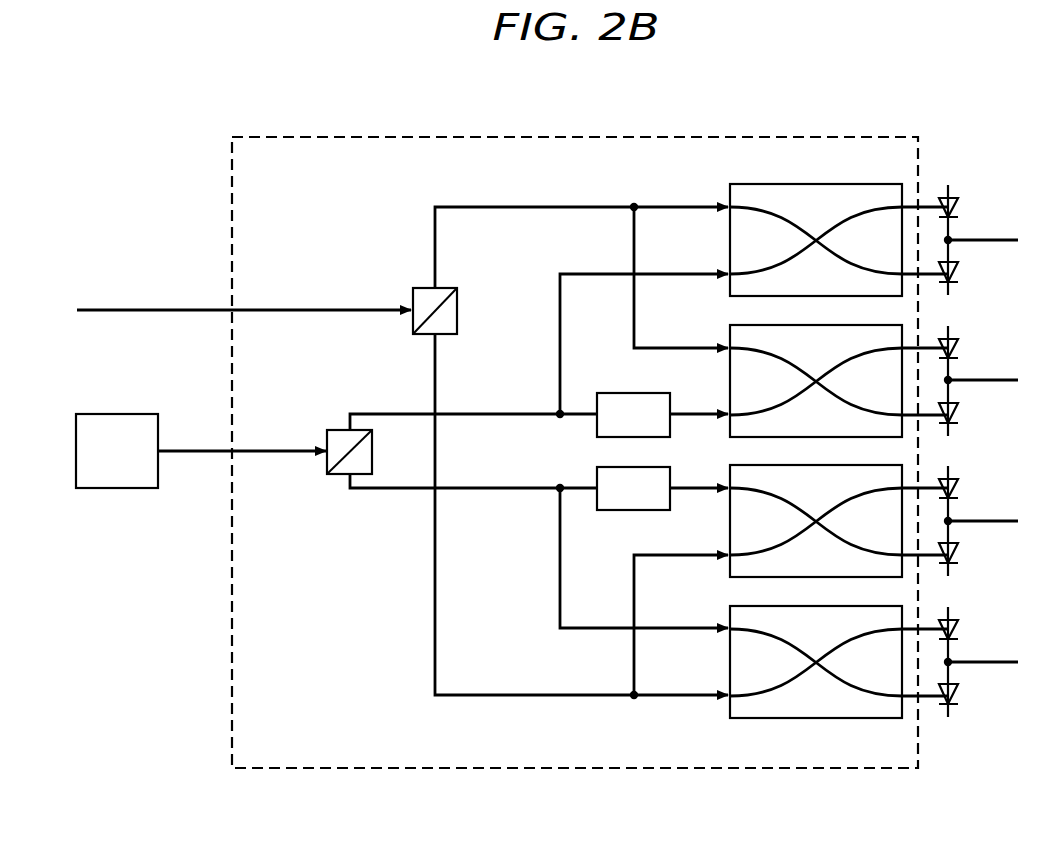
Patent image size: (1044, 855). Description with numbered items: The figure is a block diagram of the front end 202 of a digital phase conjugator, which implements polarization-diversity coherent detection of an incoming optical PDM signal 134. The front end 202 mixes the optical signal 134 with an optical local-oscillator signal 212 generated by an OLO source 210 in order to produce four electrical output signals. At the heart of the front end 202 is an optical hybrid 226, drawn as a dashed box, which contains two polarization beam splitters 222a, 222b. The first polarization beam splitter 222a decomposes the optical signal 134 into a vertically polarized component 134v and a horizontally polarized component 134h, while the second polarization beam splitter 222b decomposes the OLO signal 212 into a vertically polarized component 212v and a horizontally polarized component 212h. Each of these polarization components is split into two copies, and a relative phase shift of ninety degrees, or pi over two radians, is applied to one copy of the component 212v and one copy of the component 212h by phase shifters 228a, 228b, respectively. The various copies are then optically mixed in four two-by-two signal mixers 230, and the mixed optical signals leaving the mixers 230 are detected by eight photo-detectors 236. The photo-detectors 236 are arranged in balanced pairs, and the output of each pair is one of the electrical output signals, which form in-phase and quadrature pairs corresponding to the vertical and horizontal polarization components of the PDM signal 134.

The front end 202 is at (550, 89).
The optical hybrid 226 is at (393, 137).
The optical signal 134 is at (108, 310).
The vertically polarized component 134v is at (485, 206).
The horizontally polarized component 134h is at (481, 700).
The OLO source 210 is at (110, 414).
The optical local-oscillator signal 212 is at (196, 454).
The vertically polarized component 212v is at (486, 413).
The horizontally polarized component 212h is at (482, 491).
The polarization beam splitter 222a is at (411, 323).
The polarization beam splitter 222b is at (333, 477).
The phase shifter 228a is at (625, 393).
The phase shifter 228b is at (625, 510).
The 2x2 signal mixer 230 is at (798, 210).
The photo-detector 236 is at (948, 163).